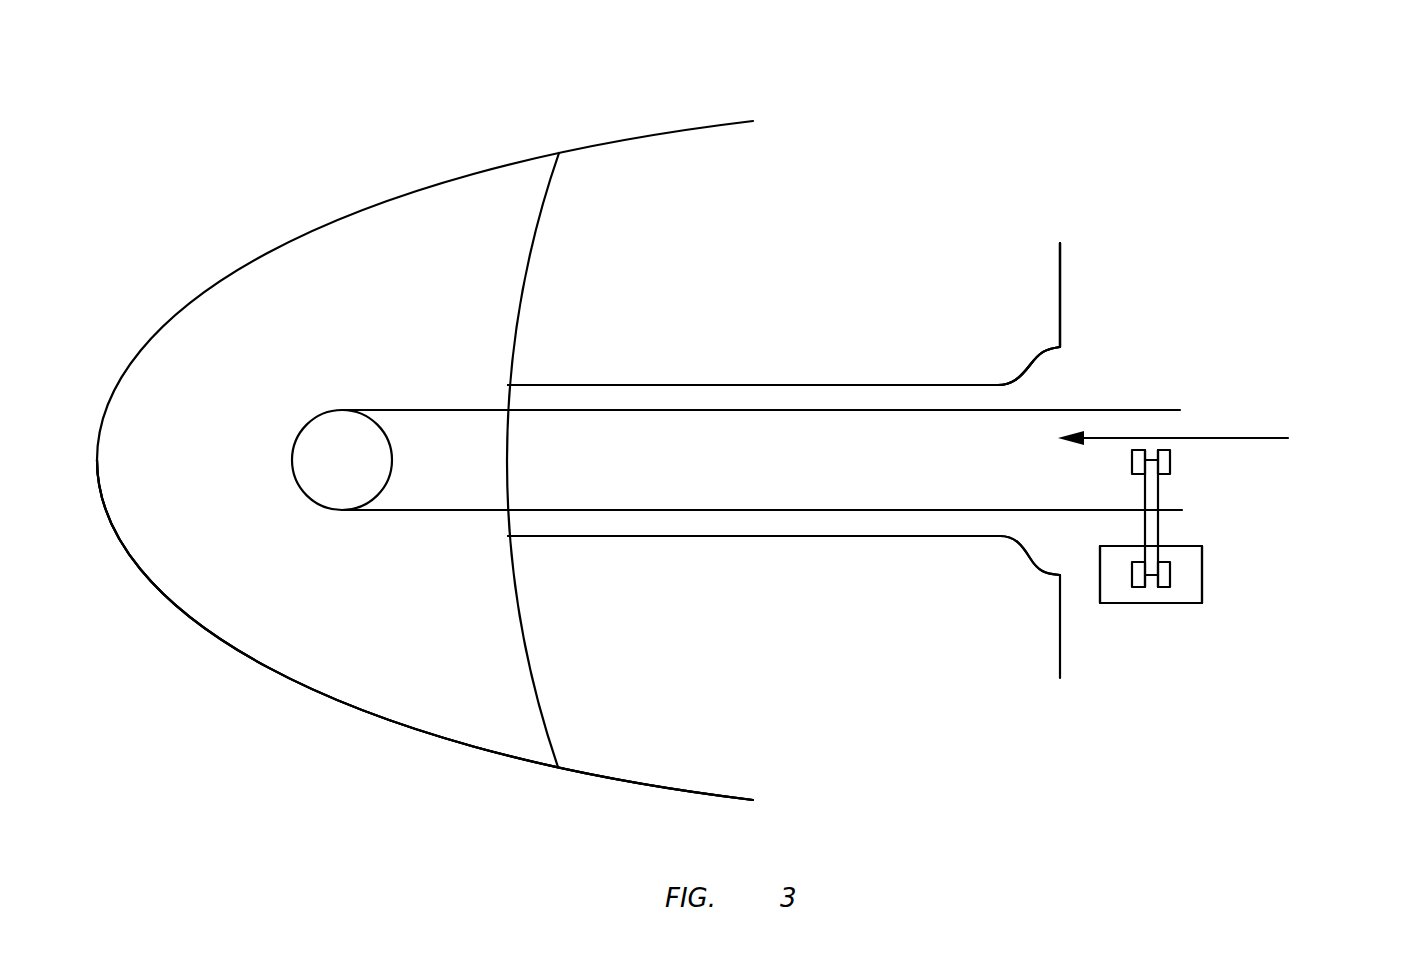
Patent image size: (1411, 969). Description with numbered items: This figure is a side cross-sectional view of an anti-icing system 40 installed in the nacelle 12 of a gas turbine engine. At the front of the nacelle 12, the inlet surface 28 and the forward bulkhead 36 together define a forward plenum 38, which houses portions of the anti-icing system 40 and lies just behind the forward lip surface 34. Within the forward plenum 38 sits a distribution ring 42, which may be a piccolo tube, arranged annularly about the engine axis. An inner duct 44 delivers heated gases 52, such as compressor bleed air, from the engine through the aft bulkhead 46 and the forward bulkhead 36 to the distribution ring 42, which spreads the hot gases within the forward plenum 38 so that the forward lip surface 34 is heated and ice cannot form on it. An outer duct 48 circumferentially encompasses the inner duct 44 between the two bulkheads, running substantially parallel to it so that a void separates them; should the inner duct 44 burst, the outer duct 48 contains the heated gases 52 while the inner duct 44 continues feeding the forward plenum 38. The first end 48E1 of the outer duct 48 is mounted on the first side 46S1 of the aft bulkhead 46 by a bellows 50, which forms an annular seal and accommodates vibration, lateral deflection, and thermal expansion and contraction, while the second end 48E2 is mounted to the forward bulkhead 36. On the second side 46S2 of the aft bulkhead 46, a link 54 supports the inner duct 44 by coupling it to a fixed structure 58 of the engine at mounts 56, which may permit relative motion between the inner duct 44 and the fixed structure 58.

The nacelle 12 is at (683, 128).
The inlet surface 28 is at (381, 740).
The forward lip surface 34 is at (184, 612).
The forward bulkhead 36 is at (530, 237).
The forward plenum 38 is at (325, 383).
The anti-icing system 40 is at (604, 560).
The distribution ring 42 is at (293, 450).
The inner duct 44 is at (739, 412).
The aft bulkhead 46 is at (1062, 648).
The first side of the aft bulkhead 46S1 is at (1045, 280).
The second side of the aft bulkhead 46S2 is at (1083, 332).
The outer duct 48 is at (873, 385).
The first end of the outer duct 48E1 is at (1014, 362).
The second end of the outer duct 48E2 is at (541, 373).
The bellows 50 is at (1033, 562).
The heated gases 52 is at (1258, 440).
The link 54 is at (1160, 492).
The mount 56 is at (1170, 572).
The fixed structure 58 is at (1115, 580).